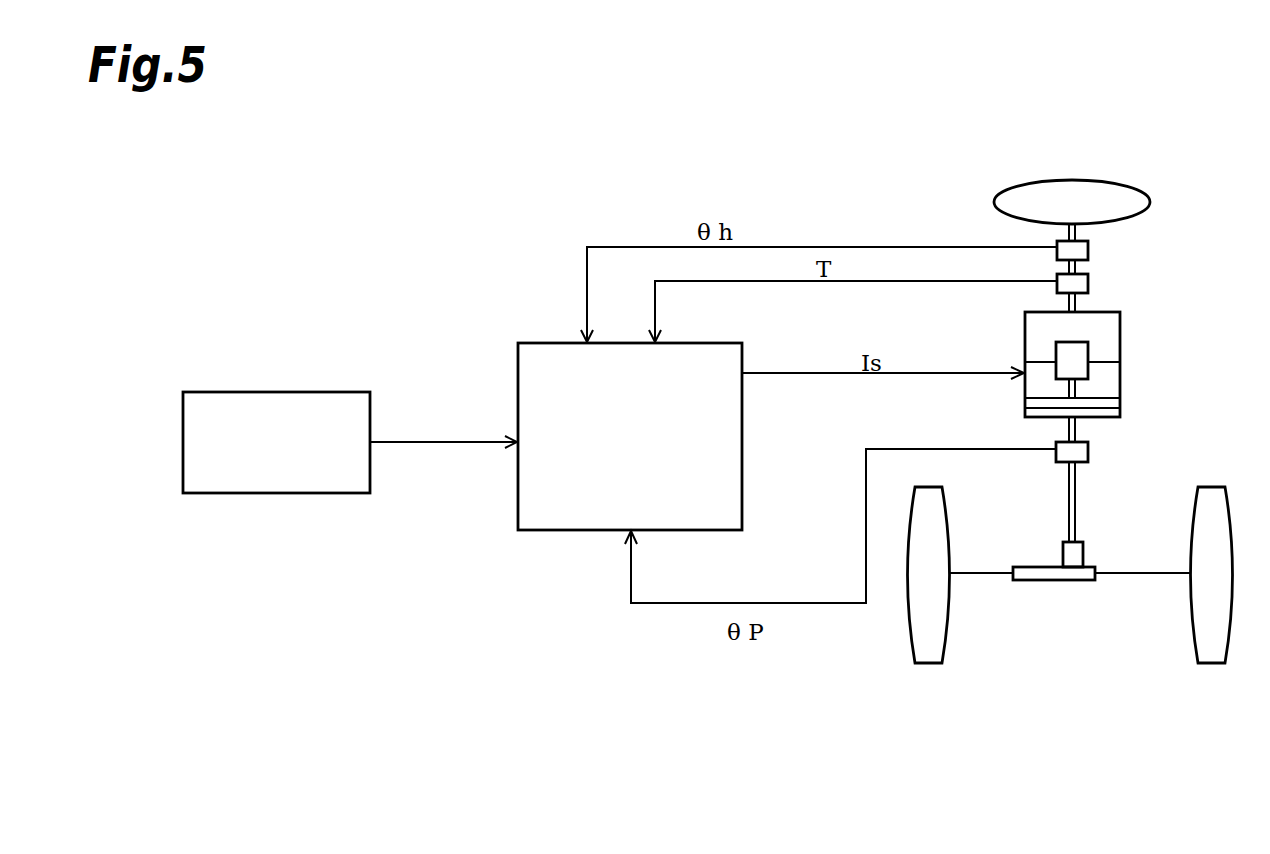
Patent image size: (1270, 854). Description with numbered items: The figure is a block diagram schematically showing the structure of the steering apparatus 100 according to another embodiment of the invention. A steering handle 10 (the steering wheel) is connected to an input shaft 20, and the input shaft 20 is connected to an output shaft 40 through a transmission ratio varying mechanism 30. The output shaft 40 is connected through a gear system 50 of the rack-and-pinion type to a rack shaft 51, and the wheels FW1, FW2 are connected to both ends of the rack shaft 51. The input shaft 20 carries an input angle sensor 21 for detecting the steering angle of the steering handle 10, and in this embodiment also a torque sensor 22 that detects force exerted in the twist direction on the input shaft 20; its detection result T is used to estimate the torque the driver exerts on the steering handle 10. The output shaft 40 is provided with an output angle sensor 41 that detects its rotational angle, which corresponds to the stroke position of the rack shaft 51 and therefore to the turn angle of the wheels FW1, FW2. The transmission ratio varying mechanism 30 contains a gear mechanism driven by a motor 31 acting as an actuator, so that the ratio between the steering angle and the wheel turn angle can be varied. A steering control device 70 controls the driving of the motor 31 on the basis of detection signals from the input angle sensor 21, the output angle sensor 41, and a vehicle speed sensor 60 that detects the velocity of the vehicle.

The steering handle 10 is at (1120, 180).
The input shaft 20 is at (1065, 232).
The input angle sensor 21 is at (1088, 250).
The torque sensor 22 is at (1088, 283).
The transmission ratio varying mechanism 30 is at (1120, 340).
The motor 31 is at (1056, 343).
The output shaft 40 is at (1078, 503).
The output angle sensor 41 is at (1088, 451).
The gear system 50 is at (1043, 581).
The rack shaft 51 is at (1133, 576).
The vehicle speed sensor 60 is at (278, 392).
The steering control device 70 is at (742, 503).
The steering apparatus 100 is at (731, 697).
The wheel FW1 is at (925, 664).
The wheel FW2 is at (1215, 664).